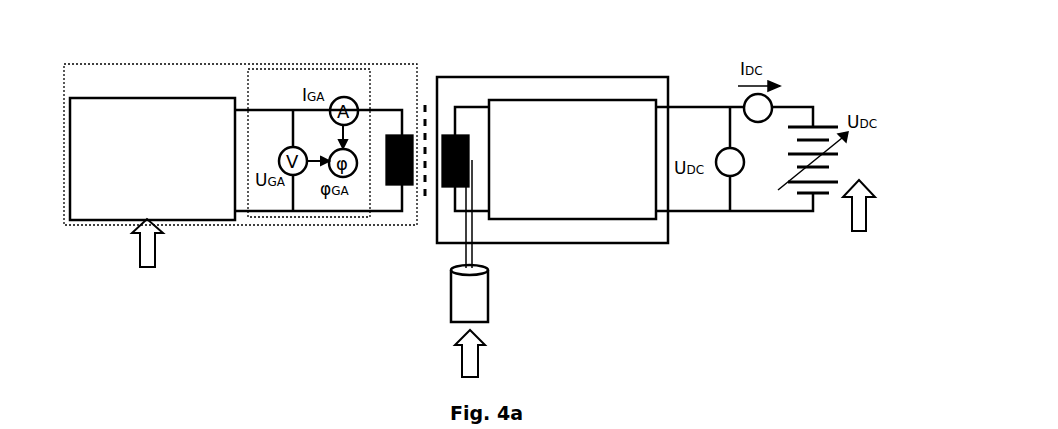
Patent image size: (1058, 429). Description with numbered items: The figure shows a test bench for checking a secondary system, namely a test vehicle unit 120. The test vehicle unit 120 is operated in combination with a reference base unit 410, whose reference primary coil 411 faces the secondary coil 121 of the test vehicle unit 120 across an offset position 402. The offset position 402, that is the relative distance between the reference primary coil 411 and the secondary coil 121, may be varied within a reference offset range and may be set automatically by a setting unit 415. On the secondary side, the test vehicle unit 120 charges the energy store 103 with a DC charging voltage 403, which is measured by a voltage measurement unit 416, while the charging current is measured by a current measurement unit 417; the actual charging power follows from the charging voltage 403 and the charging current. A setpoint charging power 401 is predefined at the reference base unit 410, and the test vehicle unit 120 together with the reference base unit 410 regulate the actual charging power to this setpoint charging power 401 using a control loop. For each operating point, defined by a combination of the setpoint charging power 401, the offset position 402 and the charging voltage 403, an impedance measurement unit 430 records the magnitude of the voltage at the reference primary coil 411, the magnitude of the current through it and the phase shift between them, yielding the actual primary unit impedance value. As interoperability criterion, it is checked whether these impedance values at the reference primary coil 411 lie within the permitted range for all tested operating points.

The reference base unit 410 is at (213, 63).
The impedance measurement unit 430 is at (293, 68).
The reference primary coil 411 is at (393, 186).
The secondary coil 121 is at (427, 216).
The setpoint charging power 401 is at (157, 248).
The test vehicle unit 120 is at (460, 73).
The setting unit 415 is at (489, 278).
The offset position 402 is at (480, 345).
The current measurement unit 417 is at (745, 95).
The voltage measurement unit 416 is at (717, 178).
The energy store 103 is at (830, 105).
The charging voltage 403 is at (850, 210).